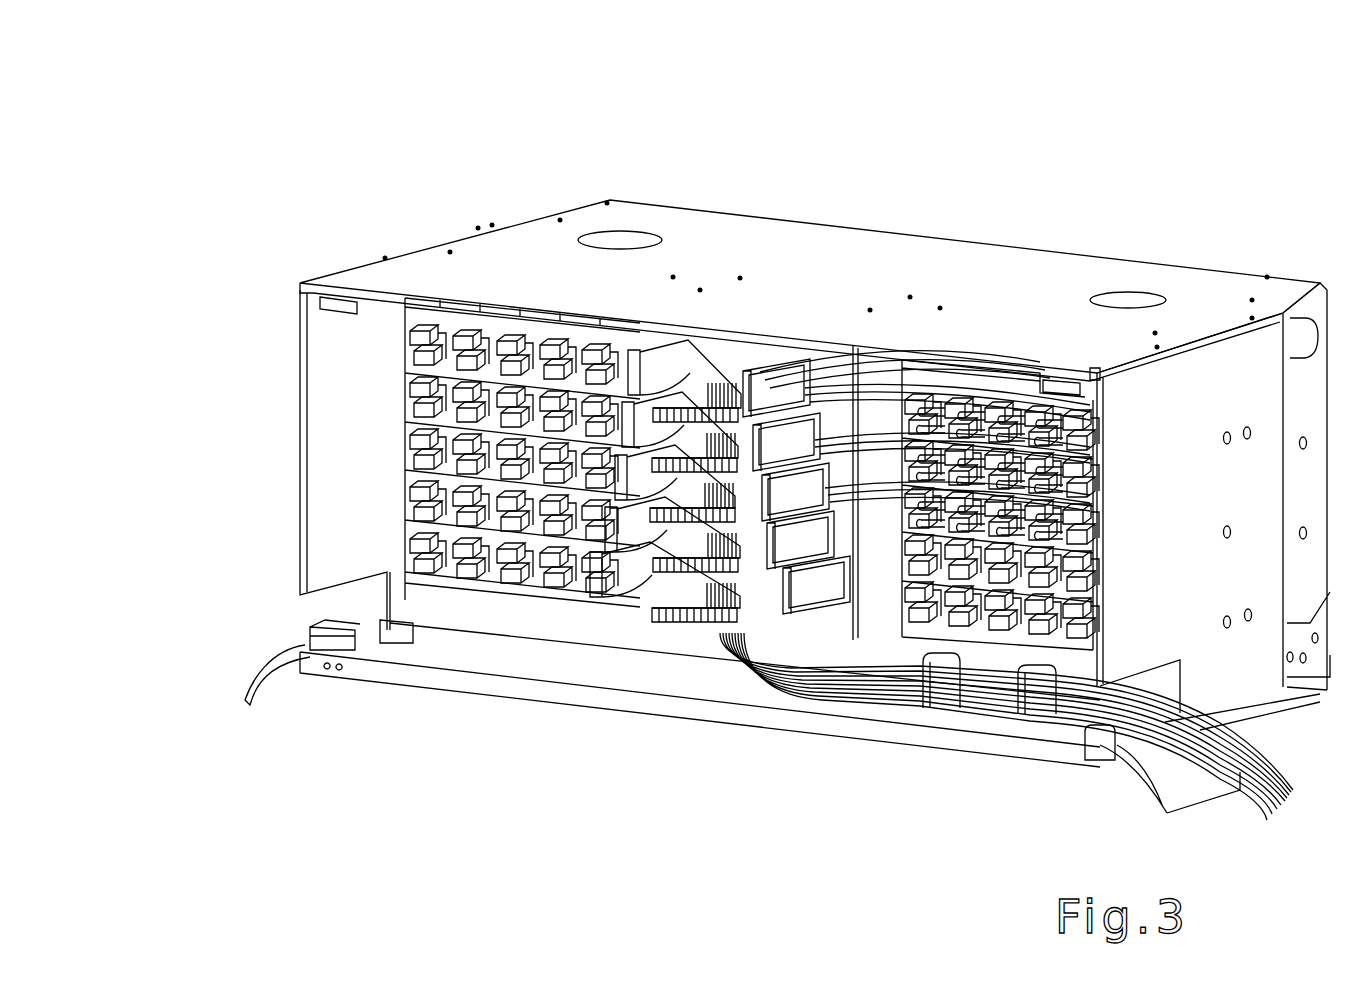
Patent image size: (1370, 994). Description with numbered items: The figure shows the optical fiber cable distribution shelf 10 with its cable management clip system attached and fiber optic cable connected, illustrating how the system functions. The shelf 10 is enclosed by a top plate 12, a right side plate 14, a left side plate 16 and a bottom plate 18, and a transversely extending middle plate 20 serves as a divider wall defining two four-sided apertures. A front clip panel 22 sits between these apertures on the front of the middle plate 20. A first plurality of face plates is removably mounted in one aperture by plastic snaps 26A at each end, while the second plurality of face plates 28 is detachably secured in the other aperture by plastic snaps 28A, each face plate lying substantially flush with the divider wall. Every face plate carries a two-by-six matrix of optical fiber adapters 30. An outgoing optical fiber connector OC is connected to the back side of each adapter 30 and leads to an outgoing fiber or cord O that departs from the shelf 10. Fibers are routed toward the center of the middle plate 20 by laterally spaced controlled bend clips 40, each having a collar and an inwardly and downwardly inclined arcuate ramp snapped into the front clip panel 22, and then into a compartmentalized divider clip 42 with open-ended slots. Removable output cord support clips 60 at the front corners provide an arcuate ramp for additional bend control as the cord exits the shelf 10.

The optical fiber cable distribution shelf 10 is at (866, 174).
The top plate 12 is at (828, 294).
The right side plate 14 is at (1190, 494).
The left side plate 16 is at (368, 456).
The bottom plate 18 is at (547, 673).
The middle plate 20 is at (566, 630).
The front clip panel 22 is at (827, 627).
The plastic snaps 26A is at (903, 613).
The second plurality of face plates 28 is at (410, 373).
The plastic snaps 28A is at (405, 548).
The optical fiber adapters 30 is at (510, 352).
The controlled bend clips 40 is at (705, 345).
The divider clip 42 is at (677, 623).
The output cord support clip 60 is at (280, 685).
The outgoing optical fiber connector OC is at (993, 365).
The outgoing fiber O is at (1075, 705).